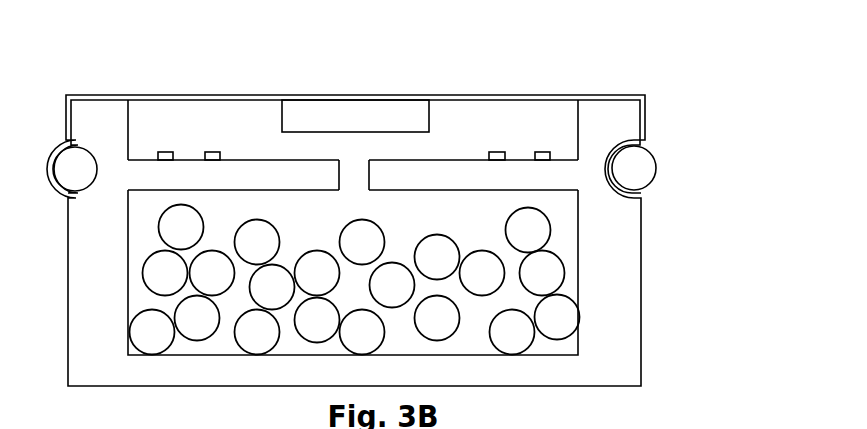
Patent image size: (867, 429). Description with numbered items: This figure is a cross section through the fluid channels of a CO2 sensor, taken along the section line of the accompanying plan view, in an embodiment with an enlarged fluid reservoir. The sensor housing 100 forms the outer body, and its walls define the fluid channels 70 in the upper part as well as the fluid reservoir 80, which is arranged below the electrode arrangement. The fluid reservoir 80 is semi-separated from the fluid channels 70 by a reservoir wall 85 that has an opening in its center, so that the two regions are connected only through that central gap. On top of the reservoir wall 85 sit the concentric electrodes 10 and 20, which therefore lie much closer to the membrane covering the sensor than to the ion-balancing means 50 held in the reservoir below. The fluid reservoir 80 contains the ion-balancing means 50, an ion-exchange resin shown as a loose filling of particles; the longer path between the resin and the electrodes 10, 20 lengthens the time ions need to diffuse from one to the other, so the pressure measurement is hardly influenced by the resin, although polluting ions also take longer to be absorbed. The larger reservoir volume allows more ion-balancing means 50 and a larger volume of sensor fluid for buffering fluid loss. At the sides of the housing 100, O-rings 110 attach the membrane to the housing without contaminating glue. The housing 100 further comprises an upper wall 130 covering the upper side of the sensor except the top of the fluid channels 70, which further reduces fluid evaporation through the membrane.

The electrode 10 is at (213, 150).
The electrode 20 is at (167, 150).
The ion-balancing means 50 is at (520, 340).
The fluid channel 70 is at (560, 143).
The fluid reservoir 80 is at (560, 213).
The reservoir wall 85 is at (247, 175).
The sensor housing 100 is at (642, 318).
The O-ring 110 is at (638, 167).
The upper wall 130 is at (340, 117).